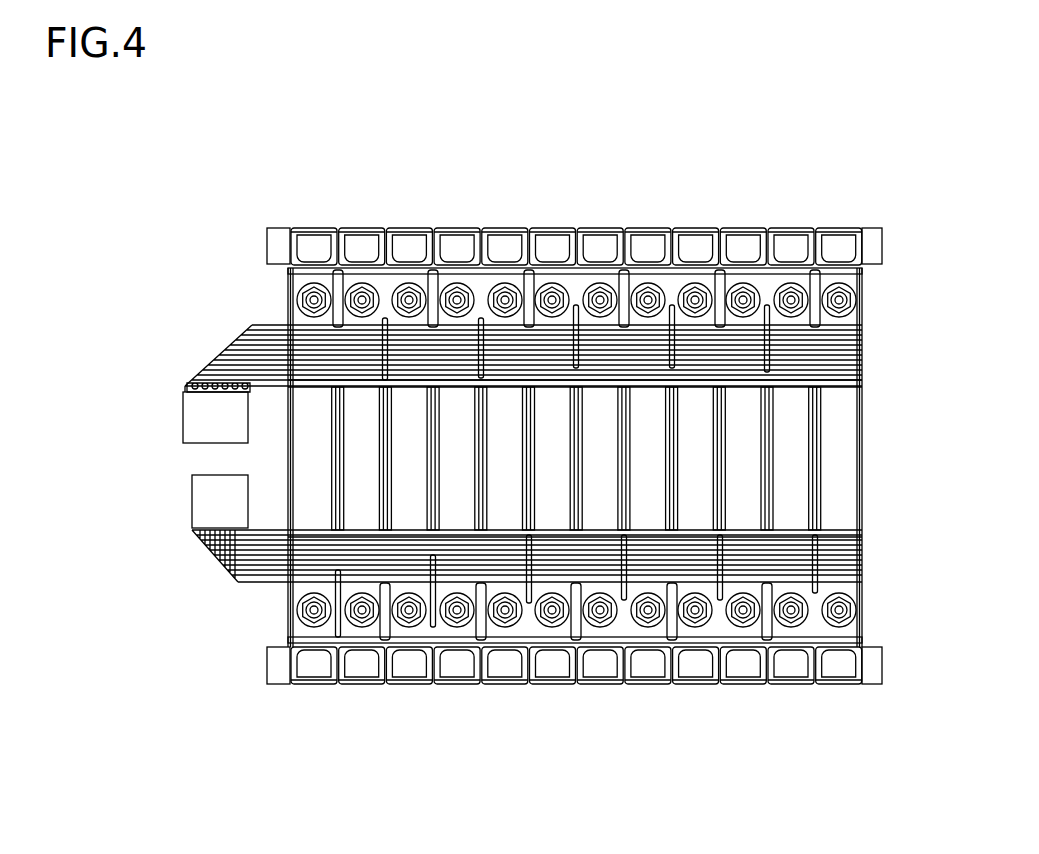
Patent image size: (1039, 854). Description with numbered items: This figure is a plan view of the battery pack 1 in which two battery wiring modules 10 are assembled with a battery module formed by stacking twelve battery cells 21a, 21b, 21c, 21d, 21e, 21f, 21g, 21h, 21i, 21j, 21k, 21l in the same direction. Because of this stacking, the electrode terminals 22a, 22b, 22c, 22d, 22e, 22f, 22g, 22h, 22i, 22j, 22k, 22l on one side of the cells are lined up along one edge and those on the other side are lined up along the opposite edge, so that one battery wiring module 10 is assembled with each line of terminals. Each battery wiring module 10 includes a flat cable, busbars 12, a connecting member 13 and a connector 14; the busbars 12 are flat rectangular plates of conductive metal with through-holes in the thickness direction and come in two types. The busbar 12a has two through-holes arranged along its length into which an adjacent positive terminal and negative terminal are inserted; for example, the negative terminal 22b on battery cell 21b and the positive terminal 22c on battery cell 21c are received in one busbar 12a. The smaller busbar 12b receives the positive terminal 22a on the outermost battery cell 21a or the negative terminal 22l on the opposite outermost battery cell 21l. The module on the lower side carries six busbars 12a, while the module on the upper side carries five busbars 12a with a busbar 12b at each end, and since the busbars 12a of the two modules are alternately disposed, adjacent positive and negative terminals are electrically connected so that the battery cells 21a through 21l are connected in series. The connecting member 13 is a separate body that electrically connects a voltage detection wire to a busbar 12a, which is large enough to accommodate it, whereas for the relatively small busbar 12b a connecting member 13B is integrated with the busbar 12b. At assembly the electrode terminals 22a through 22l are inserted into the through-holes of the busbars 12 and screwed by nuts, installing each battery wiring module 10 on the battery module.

The battery pack 1 is at (150, 182).
The battery wiring module 10 is at (895, 326).
The busbars 12 is at (930, 105).
The busbar 12a is at (394, 278).
The busbar 12b is at (300, 278).
The connecting member 13 is at (385, 372).
The connecting member 13B is at (862, 300).
The connector 14 is at (183, 418).
The battery cell 21a is at (304, 667).
The battery cell 21b is at (352, 667).
The battery cell 21c is at (399, 667).
The battery cell 21d is at (447, 667).
The battery cell 21e is at (495, 667).
The battery cell 21f is at (542, 667).
The battery cell 21g is at (590, 667).
The battery cell 21h is at (638, 667).
The battery cell 21i is at (686, 667).
The battery cell 21j is at (733, 667).
The battery cell 21k is at (781, 667).
The battery cell 21l is at (829, 667).
The positive terminal 22a is at (317, 283).
The negative terminal 22b is at (365, 283).
The positive terminal 22c is at (412, 283).
The electrode terminal 22d is at (460, 283).
The electrode terminal 22e is at (508, 283).
The electrode terminal 22f is at (555, 283).
The electrode terminal 22g is at (603, 283).
The electrode terminal 22h is at (651, 283).
The electrode terminal 22i is at (699, 283).
The electrode terminal 22j is at (746, 283).
The electrode terminal 22k is at (794, 283).
The negative terminal 22l is at (842, 283).